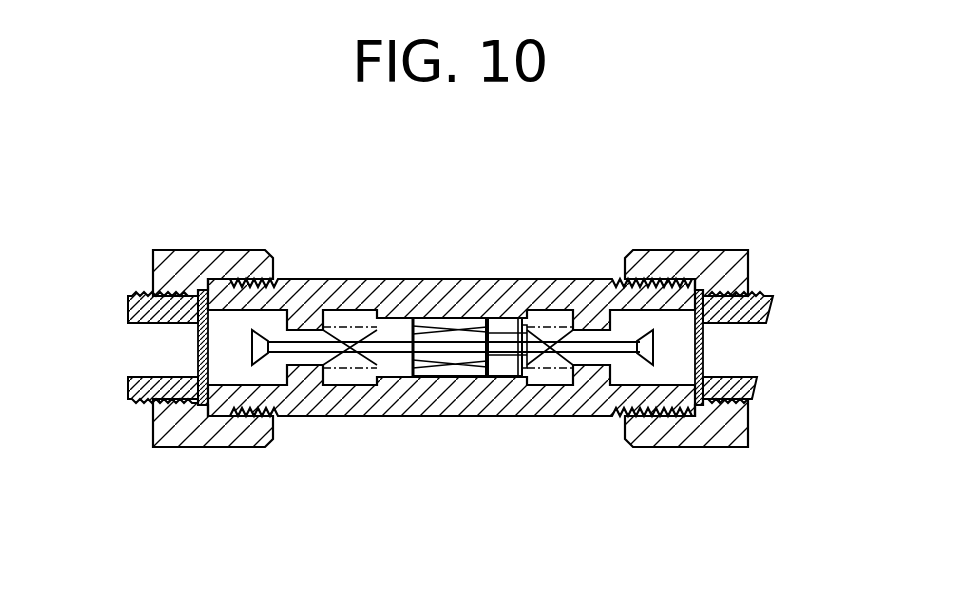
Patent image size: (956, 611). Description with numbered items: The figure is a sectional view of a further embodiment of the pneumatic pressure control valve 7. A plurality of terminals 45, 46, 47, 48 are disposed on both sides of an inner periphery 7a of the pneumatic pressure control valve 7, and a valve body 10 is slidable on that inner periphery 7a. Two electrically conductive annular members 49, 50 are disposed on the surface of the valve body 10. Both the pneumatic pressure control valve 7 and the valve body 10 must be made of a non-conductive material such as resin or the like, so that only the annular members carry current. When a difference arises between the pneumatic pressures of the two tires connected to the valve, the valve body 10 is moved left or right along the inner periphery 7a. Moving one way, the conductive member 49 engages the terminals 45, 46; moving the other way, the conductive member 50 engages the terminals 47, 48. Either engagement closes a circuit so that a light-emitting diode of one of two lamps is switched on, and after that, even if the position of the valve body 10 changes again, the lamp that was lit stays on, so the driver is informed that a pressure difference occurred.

The pneumatic pressure control valve 7 is at (310, 419).
The inner periphery 7a is at (435, 279).
The valve body 10 is at (527, 279).
The terminal 45 is at (500, 279).
The terminal 46 is at (510, 417).
The terminal 47 is at (390, 279).
The terminal 48 is at (388, 417).
The electrically conductive annular member 49 is at (477, 417).
The electrically conductive annular member 50 is at (432, 417).